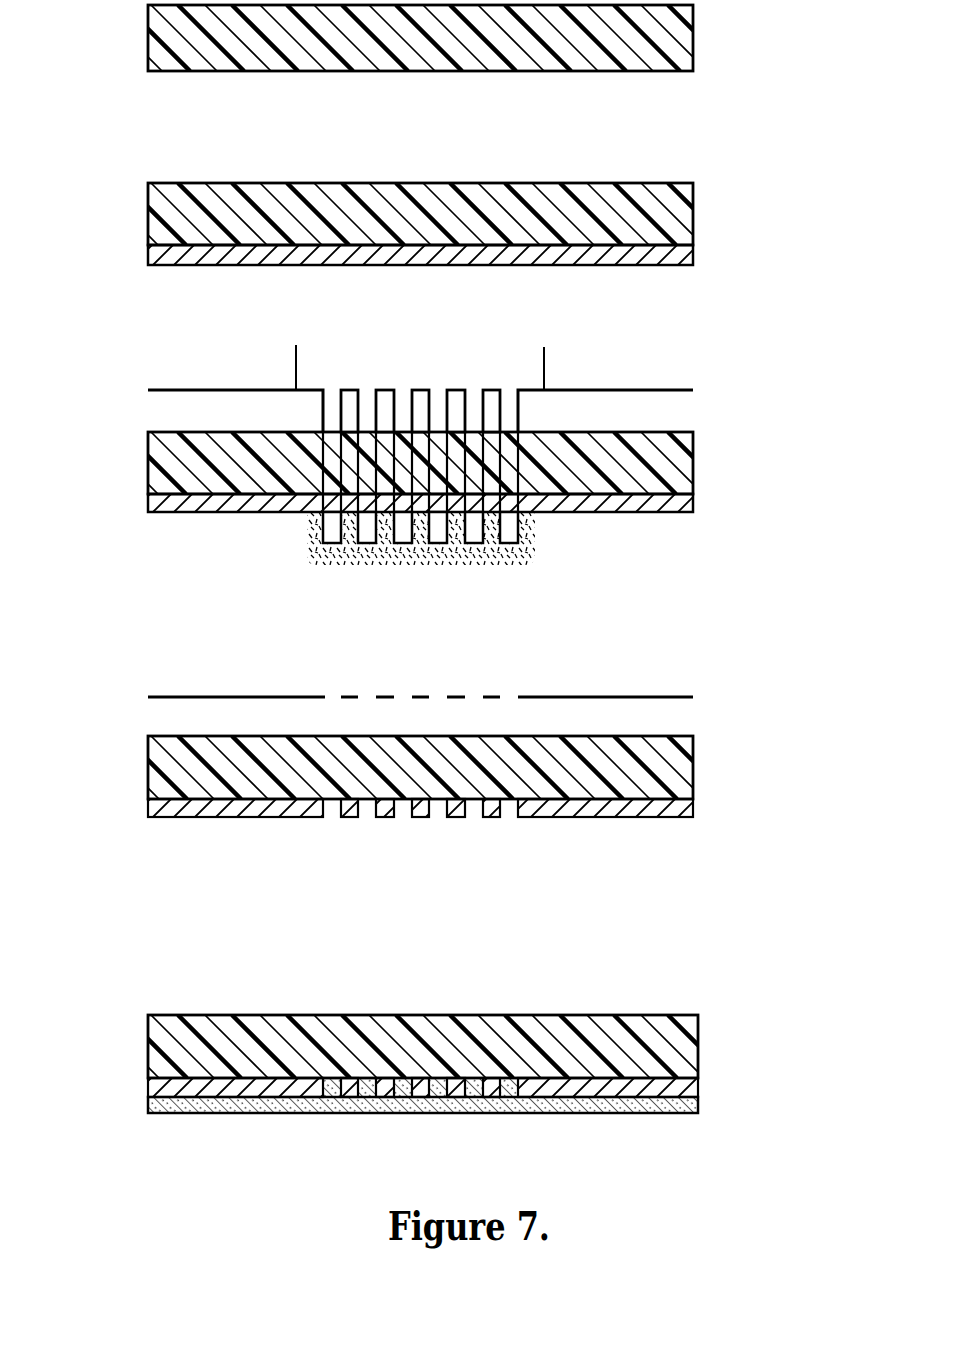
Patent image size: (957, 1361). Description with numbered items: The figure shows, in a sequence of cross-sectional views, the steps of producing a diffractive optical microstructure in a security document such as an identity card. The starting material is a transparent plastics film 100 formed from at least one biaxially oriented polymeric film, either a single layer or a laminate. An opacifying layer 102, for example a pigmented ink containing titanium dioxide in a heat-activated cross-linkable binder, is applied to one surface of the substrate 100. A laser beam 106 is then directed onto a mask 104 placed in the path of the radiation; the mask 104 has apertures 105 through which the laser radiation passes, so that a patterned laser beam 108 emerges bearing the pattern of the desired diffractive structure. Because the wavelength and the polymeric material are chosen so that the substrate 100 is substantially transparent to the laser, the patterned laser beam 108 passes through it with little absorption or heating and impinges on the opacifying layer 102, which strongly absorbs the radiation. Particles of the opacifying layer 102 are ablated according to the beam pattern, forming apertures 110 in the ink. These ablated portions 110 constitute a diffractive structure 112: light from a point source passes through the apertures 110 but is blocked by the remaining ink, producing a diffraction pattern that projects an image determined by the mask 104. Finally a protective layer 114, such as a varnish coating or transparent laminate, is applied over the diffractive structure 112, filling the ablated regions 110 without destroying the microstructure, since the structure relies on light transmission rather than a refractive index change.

The transparent plastics film 100 is at (660, 42).
The opacifying layer 102 is at (670, 260).
The mask 104 is at (185, 375).
The aperture 105 is at (337, 378).
The laser beam 106 is at (500, 358).
The patterned laser beam 108 is at (535, 563).
The apertures 110 is at (405, 822).
The diffractive structure 112 is at (533, 1088).
The protective layer 114 is at (692, 1112).